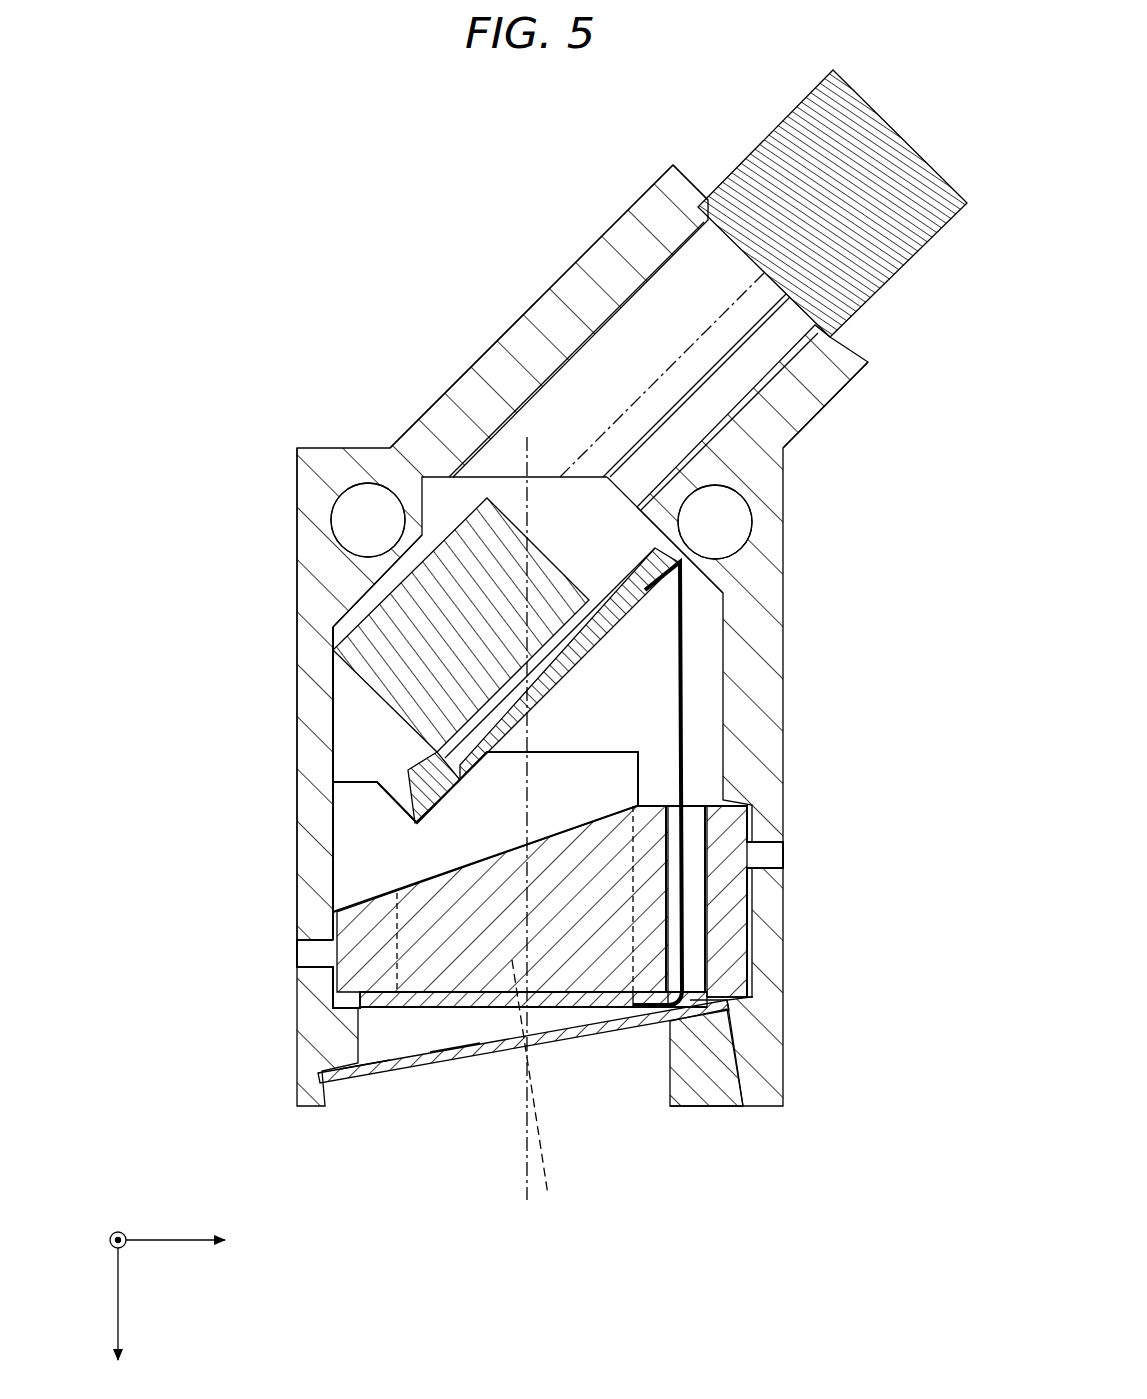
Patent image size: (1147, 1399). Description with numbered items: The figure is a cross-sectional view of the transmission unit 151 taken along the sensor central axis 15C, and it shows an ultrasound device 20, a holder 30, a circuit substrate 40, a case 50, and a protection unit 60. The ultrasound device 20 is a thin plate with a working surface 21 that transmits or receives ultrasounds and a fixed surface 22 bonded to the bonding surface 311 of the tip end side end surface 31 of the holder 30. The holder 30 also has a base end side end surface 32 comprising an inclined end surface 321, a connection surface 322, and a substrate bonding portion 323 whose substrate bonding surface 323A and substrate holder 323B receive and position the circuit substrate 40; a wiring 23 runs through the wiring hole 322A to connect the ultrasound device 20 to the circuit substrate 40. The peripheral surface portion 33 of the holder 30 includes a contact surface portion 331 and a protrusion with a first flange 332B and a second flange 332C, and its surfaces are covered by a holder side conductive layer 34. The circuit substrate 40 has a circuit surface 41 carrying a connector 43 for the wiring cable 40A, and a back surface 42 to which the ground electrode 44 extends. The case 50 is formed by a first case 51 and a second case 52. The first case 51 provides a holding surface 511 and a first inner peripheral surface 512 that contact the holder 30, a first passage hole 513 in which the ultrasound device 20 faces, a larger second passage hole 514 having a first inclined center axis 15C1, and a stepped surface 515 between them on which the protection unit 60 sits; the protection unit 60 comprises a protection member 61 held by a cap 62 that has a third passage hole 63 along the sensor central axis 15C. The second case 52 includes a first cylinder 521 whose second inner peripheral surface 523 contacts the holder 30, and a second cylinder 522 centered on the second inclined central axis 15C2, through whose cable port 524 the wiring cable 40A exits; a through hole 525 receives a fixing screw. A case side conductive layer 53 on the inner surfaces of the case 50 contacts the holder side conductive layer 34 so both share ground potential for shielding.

The transmission unit 151 is at (300, 298).
The sensor central axis 15C is at (527, 1205).
The first inclined center axis 15C1 is at (548, 1198).
The second inclined central axis 15C2 is at (693, 333).
The ultrasound device 20 is at (615, 992).
The working surface 21 is at (420, 1048).
The fixed surface 22 is at (582, 1000).
The wiring 23 is at (688, 612).
The holder 30 is at (755, 922).
The tip end side end surface 31 is at (393, 1062).
The bonding surface 311 is at (487, 1033).
The base end side end surface 32 is at (640, 748).
The inclined end surface 321 is at (400, 885).
The connection surface 322 is at (636, 802).
The wiring hole 322A is at (707, 975).
The substrate bonding portion 323 is at (355, 790).
The substrate bonding surface 323A is at (468, 776).
The substrate holder 323B is at (385, 796).
The peripheral surface portion 33 is at (295, 958).
The contact surface portion 331 is at (333, 905).
The first flange 332B is at (297, 942).
The second flange 332C is at (770, 845).
The holder side conductive layer 34 is at (603, 750).
The circuit substrate 40 is at (610, 622).
The wiring cable 40A is at (658, 425).
The circuit surface 41 is at (657, 545).
The back surface 42 is at (648, 586).
The connector 43 is at (487, 540).
The ground electrode 44 is at (420, 792).
The case 50 is at (297, 442).
The first case 51 is at (770, 862).
The holding surface 511 is at (352, 1002).
The first inner peripheral surface 512 is at (730, 935).
The first passage hole 513 is at (345, 1095).
The second passage hole 514 is at (735, 1100).
The stepped surface 515 is at (320, 1078).
The second case 52 is at (783, 690).
The first cylinder 521 is at (295, 707).
The second cylinder 522 is at (533, 293).
The second inner peripheral surface 523 is at (330, 660).
The cable port 524 is at (775, 335).
The through hole 525 is at (368, 520).
The case side conductive layer 53 is at (515, 385).
The protection unit 60 is at (699, 1112).
The protection member 61 is at (455, 1042).
The cap 62 is at (365, 1080).
The third passage hole 63 is at (705, 962).